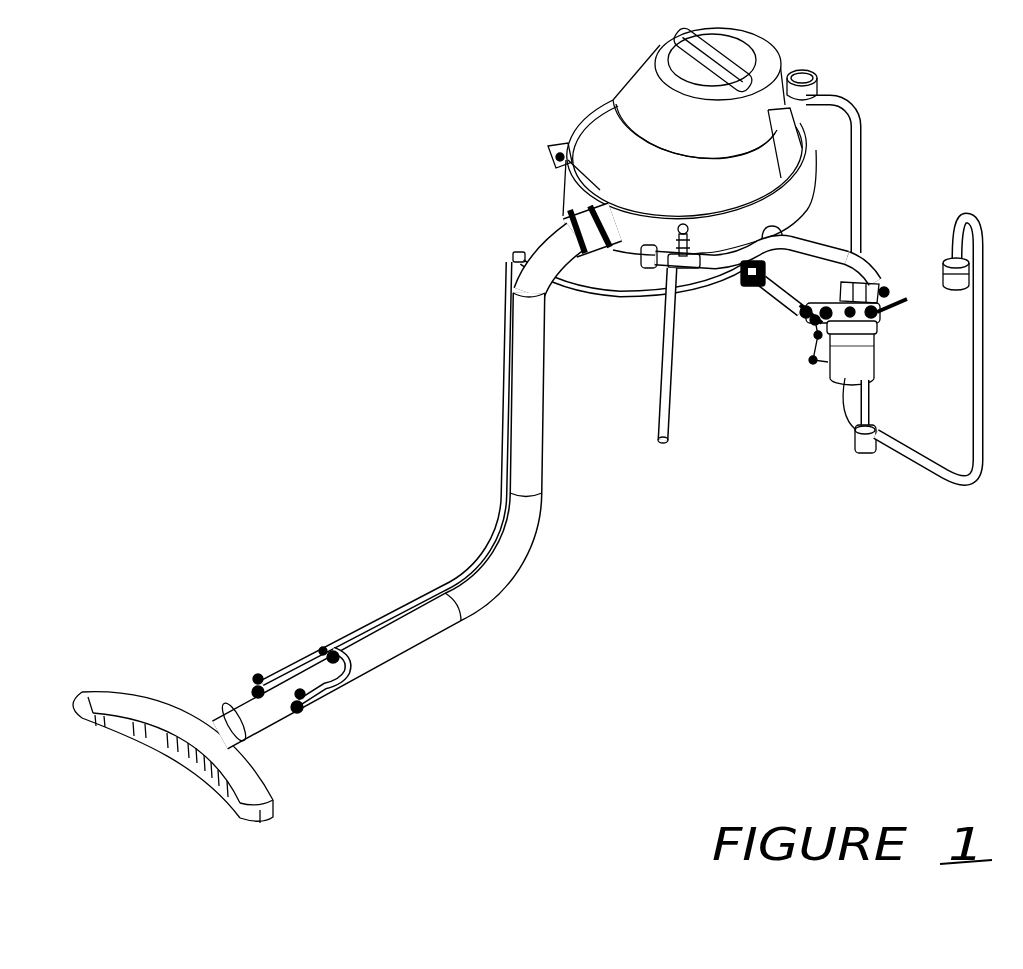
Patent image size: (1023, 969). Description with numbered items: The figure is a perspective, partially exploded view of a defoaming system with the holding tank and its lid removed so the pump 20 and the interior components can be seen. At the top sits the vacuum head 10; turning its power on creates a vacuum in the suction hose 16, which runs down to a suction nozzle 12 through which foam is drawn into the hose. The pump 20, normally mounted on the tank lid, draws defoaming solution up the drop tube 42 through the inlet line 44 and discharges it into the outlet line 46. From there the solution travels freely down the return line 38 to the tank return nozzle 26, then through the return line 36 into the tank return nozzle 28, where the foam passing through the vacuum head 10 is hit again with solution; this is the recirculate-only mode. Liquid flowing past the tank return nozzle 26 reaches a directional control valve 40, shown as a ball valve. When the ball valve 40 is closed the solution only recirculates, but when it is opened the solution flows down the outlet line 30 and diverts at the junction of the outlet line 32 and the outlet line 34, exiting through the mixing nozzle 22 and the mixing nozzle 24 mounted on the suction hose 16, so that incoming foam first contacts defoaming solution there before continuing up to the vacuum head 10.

The vacuum head 10 is at (604, 128).
The suction nozzle 12 is at (117, 704).
The suction hose 16 is at (502, 572).
The pump 20 is at (856, 372).
The mixing nozzle 22 is at (300, 712).
The mixing nozzle 24 is at (256, 690).
The tank return nozzle 26 is at (666, 262).
The tank return nozzle 28 is at (553, 158).
The outlet line 30 is at (561, 282).
The outlet line 32 is at (335, 684).
The outlet line 34 is at (298, 650).
The return line 36 is at (569, 195).
The return line 38 is at (700, 256).
The ball valve 40 is at (749, 274).
The drop tube 42 is at (667, 441).
The inlet line 44 is at (865, 268).
The outlet line 46 is at (790, 314).